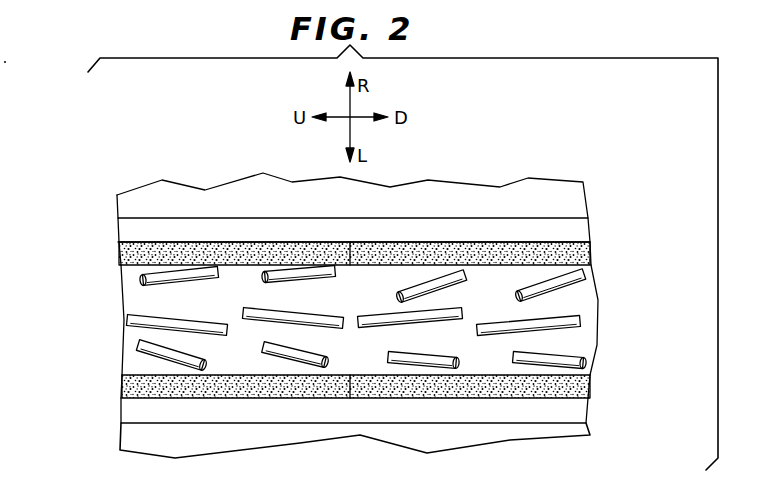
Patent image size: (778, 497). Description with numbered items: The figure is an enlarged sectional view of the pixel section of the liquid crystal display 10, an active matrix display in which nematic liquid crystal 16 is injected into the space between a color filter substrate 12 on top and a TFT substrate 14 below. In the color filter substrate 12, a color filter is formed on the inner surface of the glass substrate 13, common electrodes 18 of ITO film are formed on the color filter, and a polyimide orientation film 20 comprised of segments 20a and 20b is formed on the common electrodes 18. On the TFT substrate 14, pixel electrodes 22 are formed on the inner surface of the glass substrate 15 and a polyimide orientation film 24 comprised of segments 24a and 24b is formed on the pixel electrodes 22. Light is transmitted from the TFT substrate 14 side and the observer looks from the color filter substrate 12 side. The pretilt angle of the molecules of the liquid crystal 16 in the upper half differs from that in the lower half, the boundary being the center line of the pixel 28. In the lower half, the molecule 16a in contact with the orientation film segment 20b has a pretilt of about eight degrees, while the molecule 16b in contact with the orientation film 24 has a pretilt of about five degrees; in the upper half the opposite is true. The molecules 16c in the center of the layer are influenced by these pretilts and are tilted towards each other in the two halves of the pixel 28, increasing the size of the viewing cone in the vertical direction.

The liquid crystal display 10 is at (110, 296).
The color filter substrate 12 is at (657, 168).
The glass substrate 13 is at (568, 200).
The TFT substrate 14 is at (657, 372).
The glass substrate 15 is at (578, 432).
The nematic liquid crystal 16 is at (573, 345).
The liquid crystal molecule 16a is at (444, 284).
The liquid crystal molecule 16b is at (434, 349).
The liquid crystal molecules in the center 16c is at (126, 320).
The common electrodes 18 is at (575, 227).
The polyimide orientation film 20 is at (381, 228).
The orientation film segment 20a is at (247, 250).
The orientation film segment 20b is at (430, 248).
The pixel electrodes 22 is at (573, 408).
The polyimide orientation film 24 is at (381, 409).
The orientation film segment 24a is at (462, 394).
The orientation film segment 24b is at (208, 396).
The pixel 28 is at (577, 454).